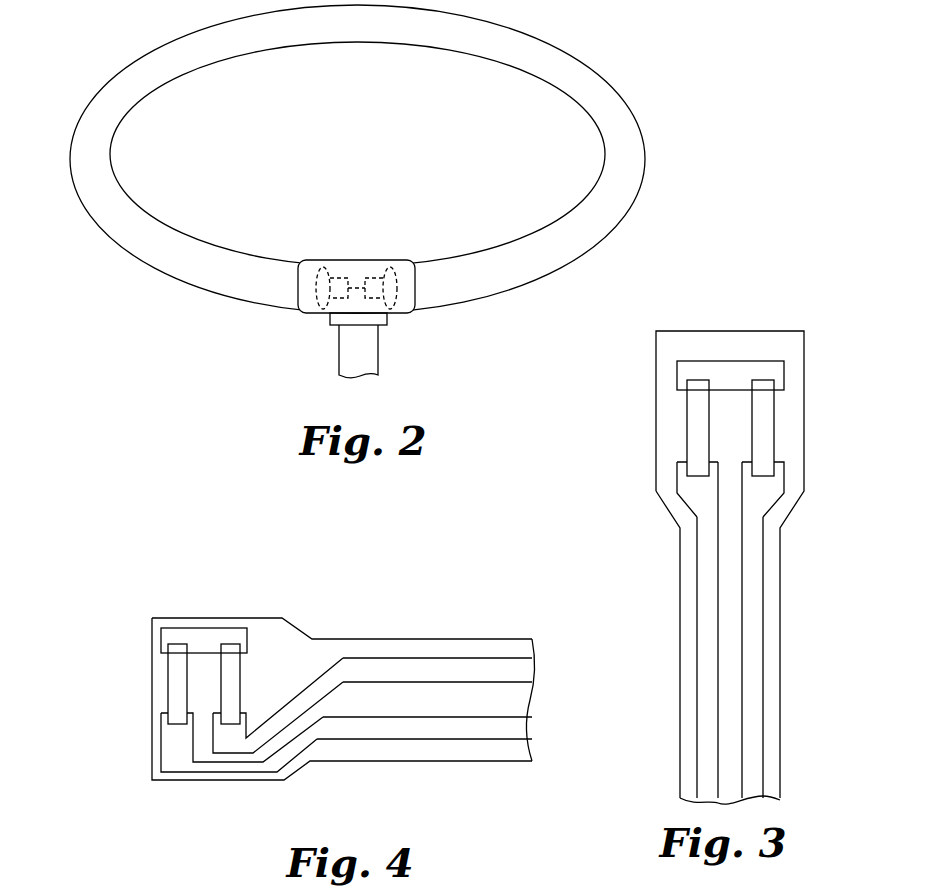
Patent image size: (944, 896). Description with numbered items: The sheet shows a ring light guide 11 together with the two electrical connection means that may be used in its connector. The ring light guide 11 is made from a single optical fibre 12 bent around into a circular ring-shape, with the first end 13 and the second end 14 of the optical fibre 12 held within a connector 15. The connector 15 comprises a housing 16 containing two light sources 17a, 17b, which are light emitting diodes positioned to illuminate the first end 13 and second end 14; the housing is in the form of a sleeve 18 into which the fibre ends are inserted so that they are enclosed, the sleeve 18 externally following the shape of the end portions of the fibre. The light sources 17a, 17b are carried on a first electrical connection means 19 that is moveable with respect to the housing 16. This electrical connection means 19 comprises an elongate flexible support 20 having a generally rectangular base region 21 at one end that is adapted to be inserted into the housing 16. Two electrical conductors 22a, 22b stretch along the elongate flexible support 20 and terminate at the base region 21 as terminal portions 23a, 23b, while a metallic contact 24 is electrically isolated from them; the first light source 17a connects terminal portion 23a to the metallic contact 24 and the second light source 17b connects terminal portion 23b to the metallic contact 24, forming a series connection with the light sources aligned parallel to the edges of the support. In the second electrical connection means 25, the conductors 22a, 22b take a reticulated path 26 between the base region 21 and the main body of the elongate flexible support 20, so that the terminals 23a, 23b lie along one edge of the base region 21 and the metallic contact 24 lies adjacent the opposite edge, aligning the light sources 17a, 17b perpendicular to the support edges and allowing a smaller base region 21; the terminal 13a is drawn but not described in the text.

In FIG. 2, the ring light guide 11 is at (390, 159).
In FIG. 2, the optical fibre 12 is at (337, 32).
In FIG. 2, the first end of the optical fibre 13 is at (311, 270).
In FIG. 2, the second end of the optical fibre 14 is at (407, 270).
In FIG. 2, the connector 15 is at (378, 276).
In FIG. 2, the housing 16 is at (366, 270).
In FIG. 2, the first light source 17a is at (330, 287).
In FIG. 3, the first light source 17a is at (695, 424).
In FIG. 4, the first light source 17a is at (177, 674).
In FIG. 2, the second light source 17b is at (385, 290).
In FIG. 3, the second light source 17b is at (765, 424).
In FIG. 4, the second light source 17b is at (237, 673).
In FIG. 2, the sleeve 18 is at (342, 269).
In FIG. 2, the first electrical connection means 19 is at (365, 371).
In FIG. 3, the first electrical connection means 19 is at (735, 544).
In FIG. 3, the elongate flexible support 20 is at (728, 630).
In FIG. 4, the elongate flexible support 20 is at (309, 709).
In FIG. 3, the base region 21 is at (665, 352).
In FIG. 4, the base region 21 is at (317, 648).
In FIG. 3, the first electrical conductor 22a is at (705, 668).
In FIG. 4, the first electrical conductor 22a is at (425, 732).
In FIG. 3, the second electrical conductor 22b is at (755, 668).
In FIG. 4, the second electrical conductor 22b is at (477, 663).
In FIG. 3, the first terminal portion 23a is at (688, 493).
In FIG. 3, the second terminal portion 23b is at (770, 493).
In FIG. 3, the metallic contact 24 is at (730, 370).
In FIG. 4, the metallic contact 24 is at (205, 638).
In FIG. 4, the second electrical connection means 25 is at (310, 679).
In FIG. 4, the reticulated path 26 is at (288, 676).
In FIG. 4, the first end terminal 13a is at (173, 748).